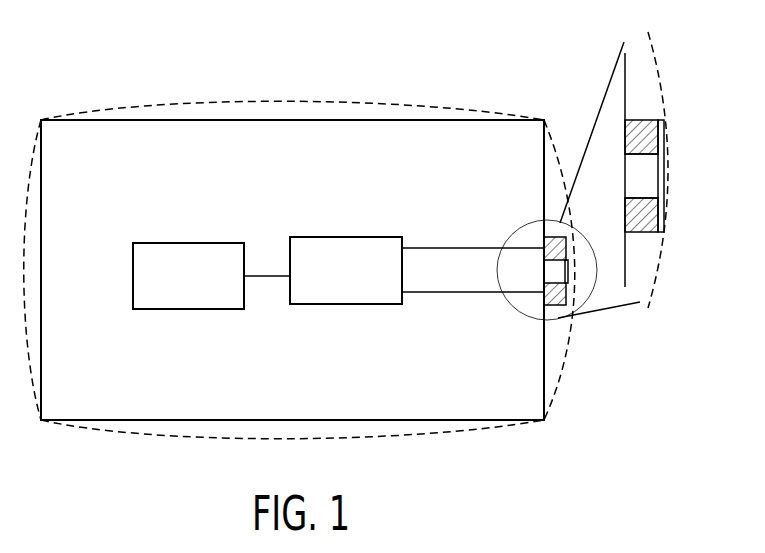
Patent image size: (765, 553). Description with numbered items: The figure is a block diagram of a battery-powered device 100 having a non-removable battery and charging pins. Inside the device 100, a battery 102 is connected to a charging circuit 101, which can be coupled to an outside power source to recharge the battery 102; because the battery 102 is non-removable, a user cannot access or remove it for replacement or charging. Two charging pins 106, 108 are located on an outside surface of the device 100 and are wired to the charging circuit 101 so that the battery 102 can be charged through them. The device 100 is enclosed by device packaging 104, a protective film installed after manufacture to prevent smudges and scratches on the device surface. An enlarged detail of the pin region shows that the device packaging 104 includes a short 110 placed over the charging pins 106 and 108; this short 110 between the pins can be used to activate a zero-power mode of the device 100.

The device 100 is at (361, 120).
The charging circuit 101 is at (302, 237).
The battery 102 is at (199, 243).
The device packaging 104 is at (445, 108).
The charging pin 106 is at (645, 119).
The charging pin 108 is at (645, 232).
The short 110 is at (664, 175).